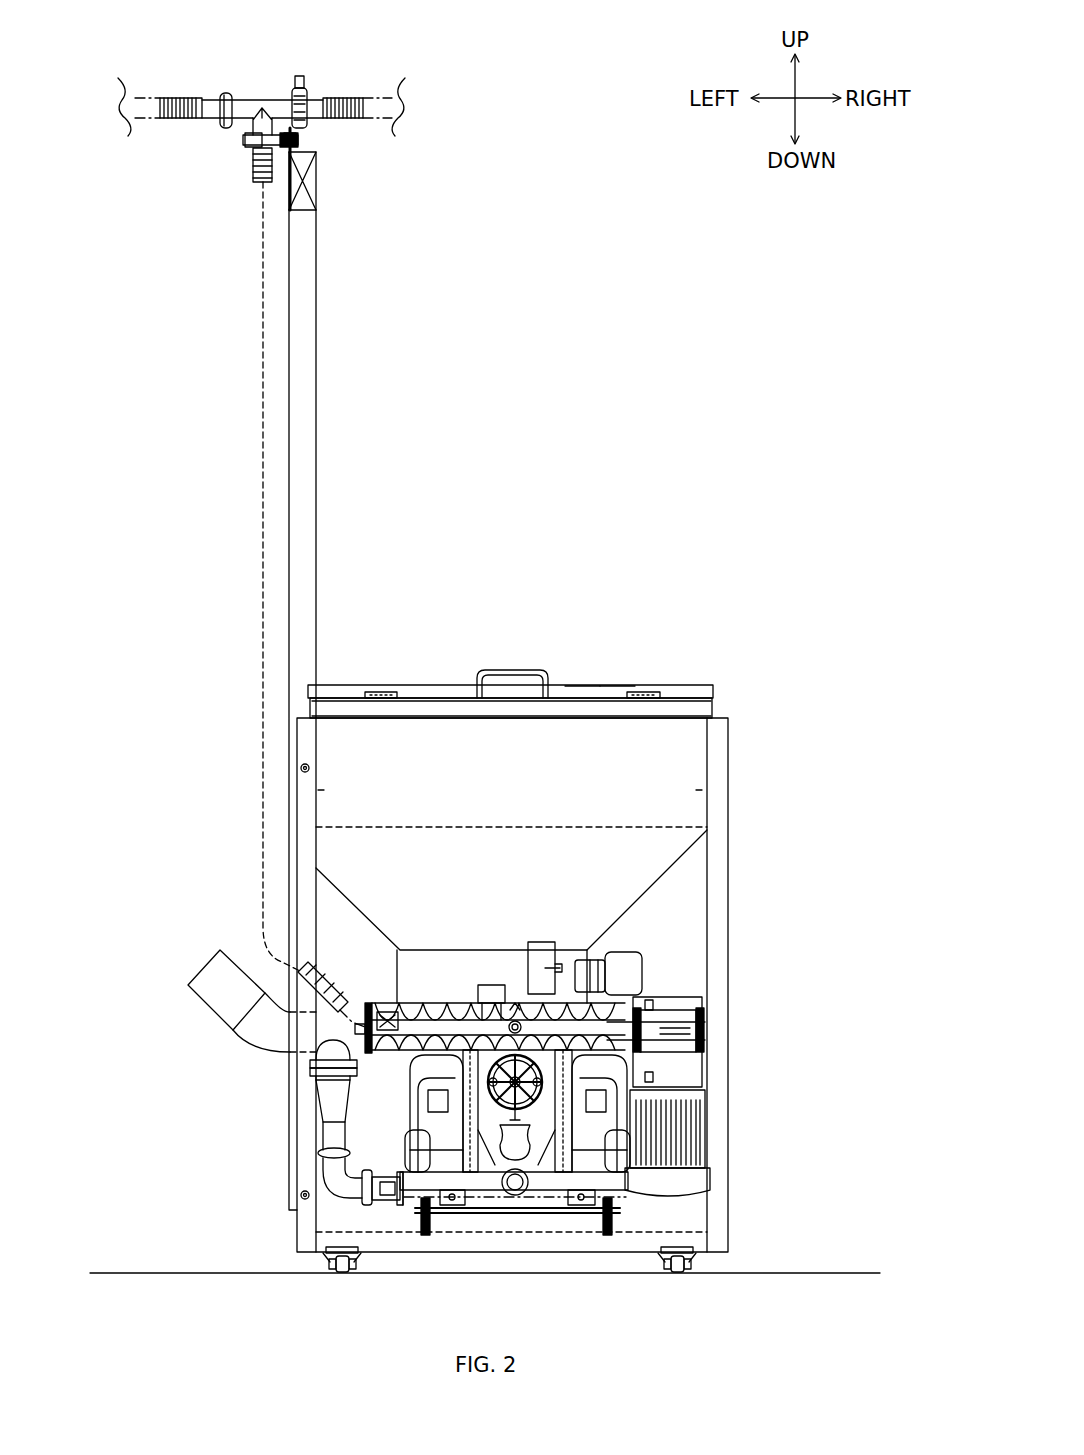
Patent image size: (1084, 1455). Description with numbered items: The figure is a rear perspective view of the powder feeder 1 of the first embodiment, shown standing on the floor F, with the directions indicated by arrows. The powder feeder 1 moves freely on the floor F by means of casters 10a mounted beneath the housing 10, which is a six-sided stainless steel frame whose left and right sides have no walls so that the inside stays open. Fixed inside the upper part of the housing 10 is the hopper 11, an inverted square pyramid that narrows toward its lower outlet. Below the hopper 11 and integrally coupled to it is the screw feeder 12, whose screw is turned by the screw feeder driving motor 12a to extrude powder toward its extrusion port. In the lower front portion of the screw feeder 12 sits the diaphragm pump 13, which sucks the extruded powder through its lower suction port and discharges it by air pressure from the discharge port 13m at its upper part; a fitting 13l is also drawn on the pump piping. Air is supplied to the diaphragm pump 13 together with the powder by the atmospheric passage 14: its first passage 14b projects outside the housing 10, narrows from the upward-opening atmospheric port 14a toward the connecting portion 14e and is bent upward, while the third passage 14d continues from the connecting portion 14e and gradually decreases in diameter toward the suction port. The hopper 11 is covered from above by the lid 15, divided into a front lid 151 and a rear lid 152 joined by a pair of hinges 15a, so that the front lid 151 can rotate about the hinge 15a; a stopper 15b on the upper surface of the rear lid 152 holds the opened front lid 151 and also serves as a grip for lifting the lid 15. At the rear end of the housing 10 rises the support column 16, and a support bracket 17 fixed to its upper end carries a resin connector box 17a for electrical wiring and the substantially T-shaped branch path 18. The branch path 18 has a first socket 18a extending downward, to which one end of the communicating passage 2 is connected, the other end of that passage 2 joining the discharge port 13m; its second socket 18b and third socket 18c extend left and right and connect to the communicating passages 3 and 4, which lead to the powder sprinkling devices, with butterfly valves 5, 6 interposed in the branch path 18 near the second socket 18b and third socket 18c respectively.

The powder feeder 1 is at (736, 570).
The communicating passage 2 is at (262, 527).
The communicating passage 3 is at (146, 96).
The communicating passage 4 is at (395, 122).
The butterfly valve 5 is at (226, 93).
The butterfly valve 6 is at (300, 86).
The housing 10 is at (729, 930).
The caster 10a is at (343, 1266).
The hopper 11 is at (670, 863).
The screw feeder 12 is at (408, 1068).
The screw feeder driving motor 12a is at (680, 1193).
The diaphragm pump 13 is at (410, 1138).
The pipe joint 13l is at (400, 1200).
The discharge port 13m is at (335, 1012).
The atmospheric passage 14 is at (217, 991).
The atmospheric port 14a is at (205, 978).
The first passage 14b is at (210, 1013).
The third passage 14d is at (317, 1113).
The connecting portion 14e is at (327, 1047).
The lid 15 is at (436, 698).
The hinge 15a is at (378, 690).
The stopper 15b is at (510, 670).
The front lid 151 is at (575, 686).
The rear lid 152 is at (600, 698).
The support column 16 is at (317, 457).
The support bracket 17 is at (288, 198).
The connector box 17a is at (318, 180).
The branch path 18 is at (254, 100).
The first socket 18a is at (255, 168).
The second socket 18b is at (165, 110).
The third socket 18c is at (365, 110).
The floor F is at (830, 1272).